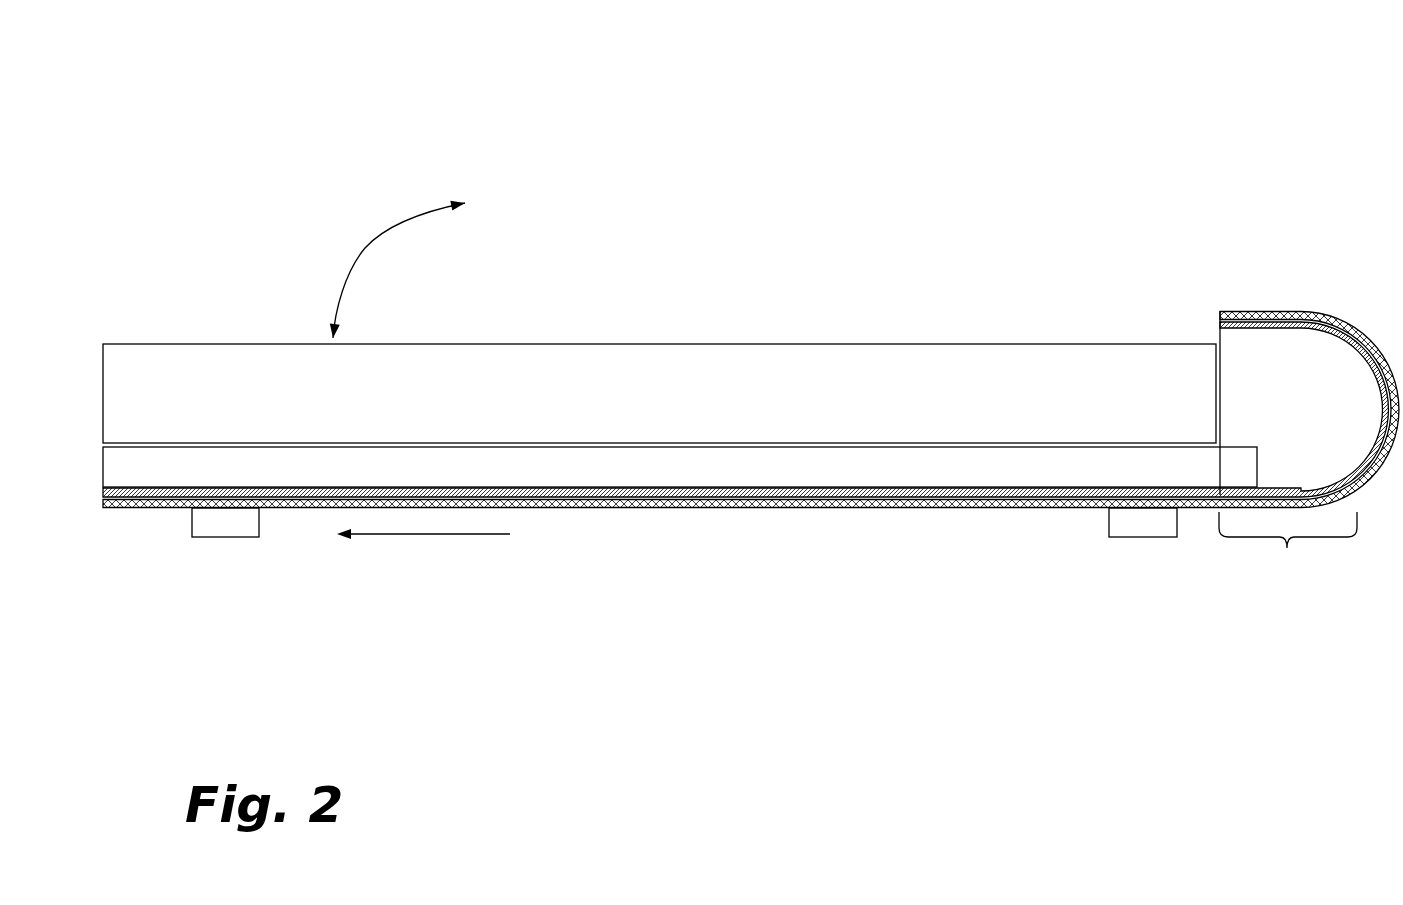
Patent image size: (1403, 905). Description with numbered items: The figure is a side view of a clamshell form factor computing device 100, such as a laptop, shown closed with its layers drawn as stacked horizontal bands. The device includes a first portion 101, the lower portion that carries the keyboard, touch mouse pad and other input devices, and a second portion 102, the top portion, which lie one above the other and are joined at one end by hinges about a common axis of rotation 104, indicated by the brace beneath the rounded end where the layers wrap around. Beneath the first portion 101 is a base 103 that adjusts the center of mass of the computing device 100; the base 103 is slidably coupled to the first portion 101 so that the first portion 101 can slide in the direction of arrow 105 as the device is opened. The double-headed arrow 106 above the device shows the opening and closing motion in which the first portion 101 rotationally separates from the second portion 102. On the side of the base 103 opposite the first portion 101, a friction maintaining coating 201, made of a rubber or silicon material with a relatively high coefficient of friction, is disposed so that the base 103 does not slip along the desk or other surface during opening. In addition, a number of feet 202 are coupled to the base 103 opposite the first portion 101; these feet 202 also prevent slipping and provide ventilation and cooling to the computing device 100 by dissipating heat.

The computing device 100 is at (285, 125).
The first portion 101 is at (678, 472).
The second portion 102 is at (618, 392).
The base 103 is at (822, 493).
The axis of rotation 104 is at (1288, 544).
The arrow 105 is at (415, 534).
The arrow 106 is at (365, 248).
The friction maintaining coating 201 is at (1015, 507).
The feet 202 is at (230, 517).